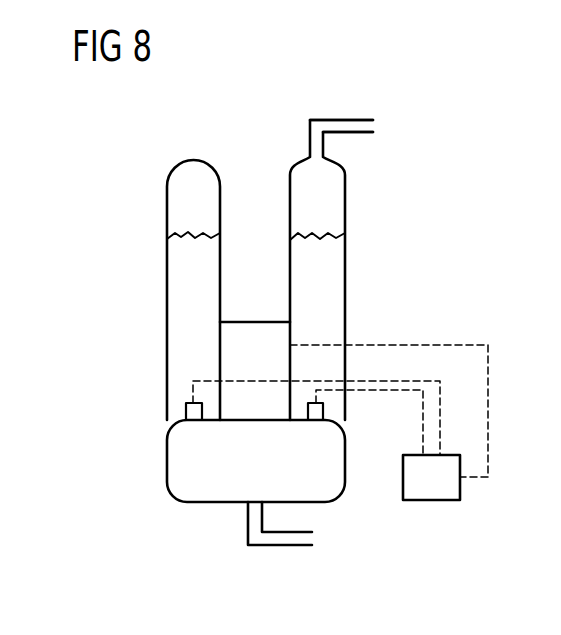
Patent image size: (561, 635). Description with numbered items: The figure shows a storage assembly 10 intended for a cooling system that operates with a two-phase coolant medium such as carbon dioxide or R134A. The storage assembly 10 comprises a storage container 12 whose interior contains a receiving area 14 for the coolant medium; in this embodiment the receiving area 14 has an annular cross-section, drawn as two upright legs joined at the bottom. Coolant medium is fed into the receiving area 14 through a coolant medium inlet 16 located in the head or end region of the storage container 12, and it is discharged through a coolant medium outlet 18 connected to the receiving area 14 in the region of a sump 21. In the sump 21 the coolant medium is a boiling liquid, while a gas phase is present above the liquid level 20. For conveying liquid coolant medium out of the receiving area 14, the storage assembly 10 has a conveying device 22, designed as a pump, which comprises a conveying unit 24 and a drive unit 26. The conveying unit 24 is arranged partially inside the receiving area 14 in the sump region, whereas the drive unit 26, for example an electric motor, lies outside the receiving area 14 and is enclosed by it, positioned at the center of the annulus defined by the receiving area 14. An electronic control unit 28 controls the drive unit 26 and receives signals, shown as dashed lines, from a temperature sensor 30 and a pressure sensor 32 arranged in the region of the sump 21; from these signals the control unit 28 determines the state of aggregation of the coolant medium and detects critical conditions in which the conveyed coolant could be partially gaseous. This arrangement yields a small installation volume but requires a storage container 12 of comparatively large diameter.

The storage assembly 10 is at (418, 188).
The storage container 12 is at (193, 159).
The receiving area 14 is at (176, 208).
The coolant medium inlet 16 is at (354, 121).
The coolant medium outlet 18 is at (294, 538).
The liquid level 20 is at (312, 236).
The sump 21 is at (155, 433).
The conveying device 22 is at (214, 512).
The conveying unit 24 is at (174, 480).
The drive unit 26 is at (250, 331).
The electronic control unit 28 is at (430, 503).
The temperature sensor 30 is at (193, 423).
The pressure sensor 32 is at (316, 423).